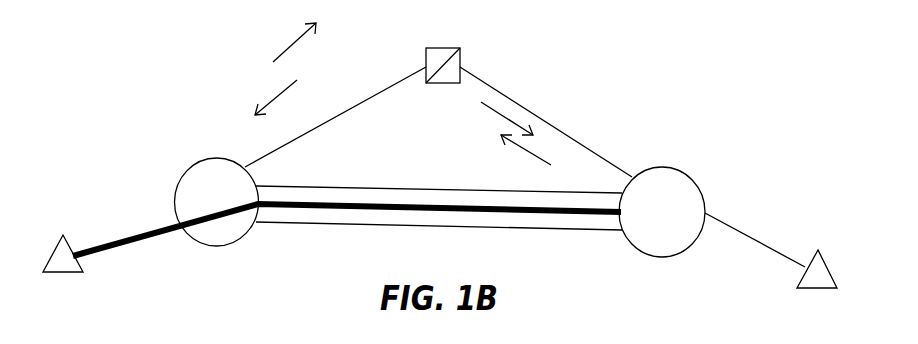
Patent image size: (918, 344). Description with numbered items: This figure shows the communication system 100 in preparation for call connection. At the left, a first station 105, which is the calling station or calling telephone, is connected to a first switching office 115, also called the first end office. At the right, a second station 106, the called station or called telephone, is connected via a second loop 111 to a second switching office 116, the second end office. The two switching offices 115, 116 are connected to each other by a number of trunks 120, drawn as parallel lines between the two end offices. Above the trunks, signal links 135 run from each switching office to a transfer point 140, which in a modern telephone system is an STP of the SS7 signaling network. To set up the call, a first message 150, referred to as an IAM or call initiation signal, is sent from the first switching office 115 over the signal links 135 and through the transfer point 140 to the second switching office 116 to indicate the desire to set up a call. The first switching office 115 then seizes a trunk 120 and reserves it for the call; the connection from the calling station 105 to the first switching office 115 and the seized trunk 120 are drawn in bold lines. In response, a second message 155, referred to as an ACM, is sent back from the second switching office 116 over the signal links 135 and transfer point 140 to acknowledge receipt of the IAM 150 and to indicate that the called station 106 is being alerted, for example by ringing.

The communication system 100 is at (612, 102).
The first station 105 is at (63, 276).
The second station 106 is at (818, 290).
The second loop 111 is at (742, 232).
The first switching office 115 is at (201, 160).
The second switching office 116 is at (684, 171).
The trunk 120 is at (363, 210).
The signal links 135 is at (378, 91).
The transfer point 140 is at (443, 48).
The first message 150 is at (297, 40).
The second message 155 is at (271, 101).